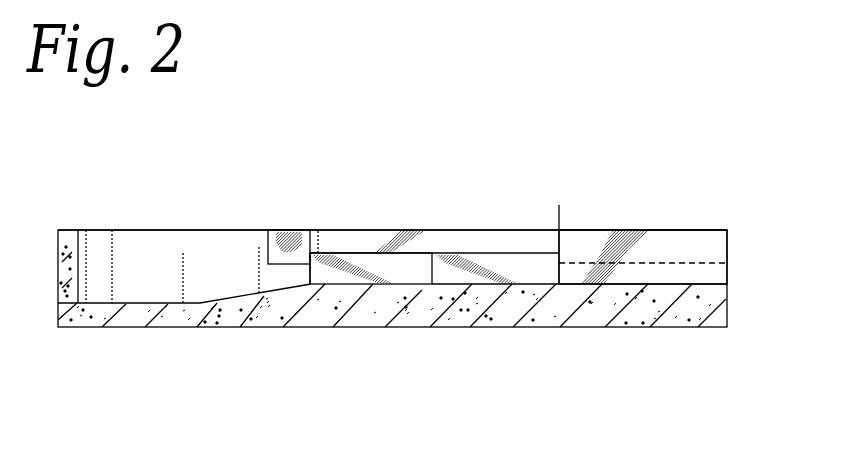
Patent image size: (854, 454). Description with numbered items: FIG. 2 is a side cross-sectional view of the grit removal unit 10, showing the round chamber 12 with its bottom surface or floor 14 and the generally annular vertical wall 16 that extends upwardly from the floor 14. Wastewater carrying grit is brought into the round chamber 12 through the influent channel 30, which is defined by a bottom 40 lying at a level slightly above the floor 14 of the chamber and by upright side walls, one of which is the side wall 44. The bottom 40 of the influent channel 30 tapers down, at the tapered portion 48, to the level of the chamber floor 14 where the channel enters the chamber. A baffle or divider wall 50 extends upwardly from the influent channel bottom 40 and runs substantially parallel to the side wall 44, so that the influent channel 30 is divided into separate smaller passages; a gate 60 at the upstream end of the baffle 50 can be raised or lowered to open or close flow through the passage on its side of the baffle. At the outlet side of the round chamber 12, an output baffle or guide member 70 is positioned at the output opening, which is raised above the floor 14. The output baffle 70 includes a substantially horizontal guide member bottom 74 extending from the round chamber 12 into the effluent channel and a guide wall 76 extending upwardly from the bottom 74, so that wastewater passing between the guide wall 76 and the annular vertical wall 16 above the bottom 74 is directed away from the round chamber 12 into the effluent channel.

The grit removal unit 10 is at (444, 190).
The round chamber 12 is at (193, 226).
The floor 14 is at (152, 304).
The annular vertical wall 16 is at (83, 268).
The influent channel 30 is at (695, 249).
The bottom of the influent channel 40 is at (660, 283).
The upright side wall 44 is at (590, 250).
The tapered portion 48 is at (290, 288).
The baffle 50 is at (408, 268).
The gate 60 is at (560, 220).
The output baffle 70 is at (260, 248).
The guide member bottom 74 is at (298, 262).
The guide wall 76 is at (295, 250).